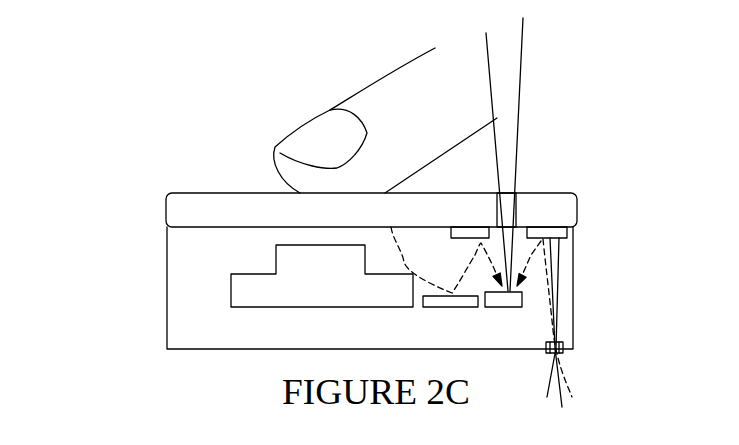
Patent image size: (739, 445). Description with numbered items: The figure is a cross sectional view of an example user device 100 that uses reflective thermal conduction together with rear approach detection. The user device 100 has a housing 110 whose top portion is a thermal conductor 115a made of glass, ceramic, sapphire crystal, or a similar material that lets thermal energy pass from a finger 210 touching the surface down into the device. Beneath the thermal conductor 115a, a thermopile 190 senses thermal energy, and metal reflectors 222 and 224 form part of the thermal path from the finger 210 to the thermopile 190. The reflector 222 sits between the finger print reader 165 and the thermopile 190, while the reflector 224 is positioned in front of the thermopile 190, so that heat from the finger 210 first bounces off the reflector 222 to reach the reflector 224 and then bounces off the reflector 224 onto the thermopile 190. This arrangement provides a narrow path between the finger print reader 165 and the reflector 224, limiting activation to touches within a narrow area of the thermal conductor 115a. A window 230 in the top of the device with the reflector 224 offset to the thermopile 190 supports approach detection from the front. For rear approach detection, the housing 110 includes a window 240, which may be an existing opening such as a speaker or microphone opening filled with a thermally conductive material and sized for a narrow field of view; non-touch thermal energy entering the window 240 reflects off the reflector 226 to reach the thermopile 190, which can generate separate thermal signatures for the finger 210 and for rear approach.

The user device 100 is at (337, 241).
The thermal conductor 115a is at (227, 193).
The housing 110 is at (573, 288).
The finger 210 is at (375, 77).
The window 230 is at (497, 216).
The reflector 224 is at (470, 239).
The reflector 226 is at (567, 233).
The window 240 is at (546, 352).
The thermopile 190 is at (500, 307).
The reflector 222 is at (450, 307).
The finger print reader 165 is at (322, 307).